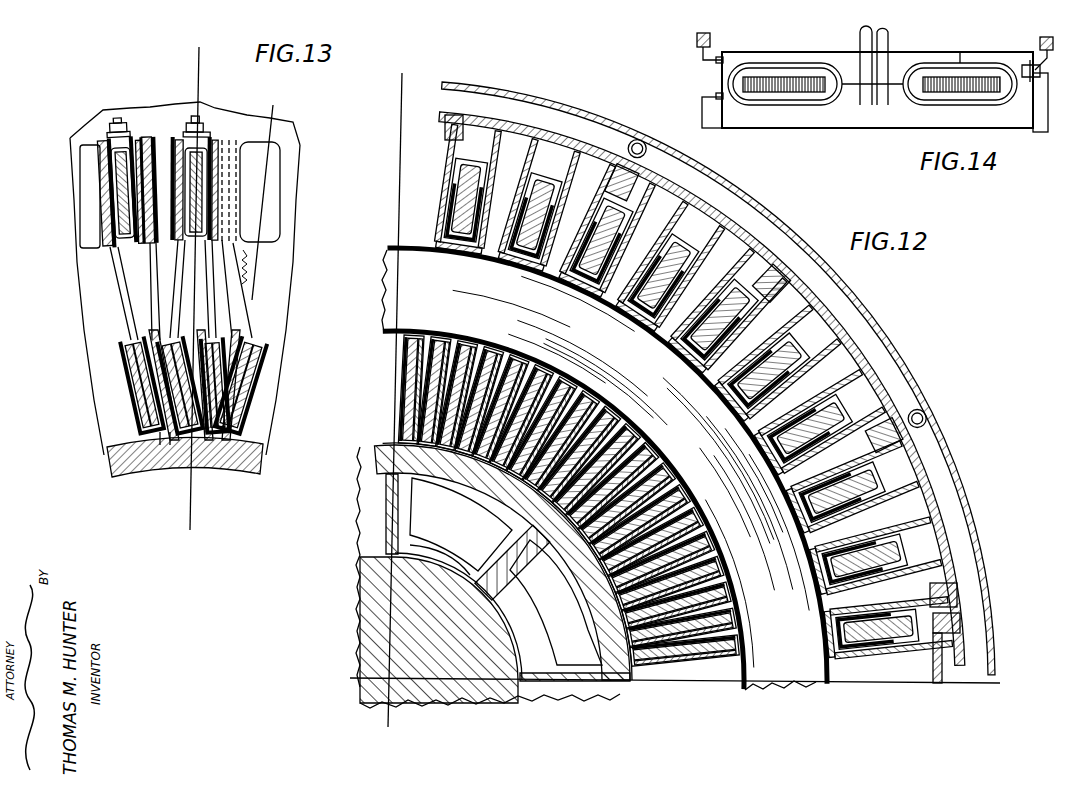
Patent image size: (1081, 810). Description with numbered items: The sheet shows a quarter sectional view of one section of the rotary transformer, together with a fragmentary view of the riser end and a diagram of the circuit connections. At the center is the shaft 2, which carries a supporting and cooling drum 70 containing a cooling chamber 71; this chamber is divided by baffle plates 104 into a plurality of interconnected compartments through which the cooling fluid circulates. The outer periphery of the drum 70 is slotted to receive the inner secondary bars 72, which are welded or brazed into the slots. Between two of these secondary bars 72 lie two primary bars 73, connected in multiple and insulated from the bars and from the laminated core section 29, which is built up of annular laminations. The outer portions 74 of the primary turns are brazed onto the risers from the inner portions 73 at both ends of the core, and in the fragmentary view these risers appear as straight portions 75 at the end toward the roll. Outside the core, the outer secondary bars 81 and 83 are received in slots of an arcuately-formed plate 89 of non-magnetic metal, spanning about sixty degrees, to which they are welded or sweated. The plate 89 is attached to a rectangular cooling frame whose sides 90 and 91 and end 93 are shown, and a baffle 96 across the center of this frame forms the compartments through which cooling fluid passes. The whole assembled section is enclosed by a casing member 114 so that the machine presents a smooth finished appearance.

In FIG. 12, the shaft 2 is at (446, 710).
In FIG. 12, the core section 29 is at (805, 695).
In FIG. 13, the supporting and cooling drum 70 is at (258, 470).
In FIG. 12, the supporting and cooling drum 70 is at (585, 585).
In FIG. 12, the cooling chamber 71 is at (576, 663).
In FIG. 13, the inner secondary bars 72 is at (258, 430).
In FIG. 12, the inner secondary bars 72 is at (516, 496).
In FIG. 12, the primary bars 73 is at (728, 568).
In FIG. 13, the outer portions of the primary turns 74 is at (125, 150).
In FIG. 12, the outer portions of the primary turns 74 is at (835, 376).
In FIG. 13, the straight primary riser portions 75 is at (132, 270).
In FIG. 12, the secondary bar 81 is at (917, 598).
In FIG. 12, the secondary bar 83 is at (900, 555).
In FIG. 12, the arcuately-formed plate 89 is at (927, 504).
In FIG. 12, the frame side 90 is at (952, 582).
In FIG. 12, the frame side 91 is at (836, 284).
In FIG. 13, the frame end 93 is at (170, 445).
In FIG. 12, the baffle 96 is at (896, 417).
In FIG. 12, the baffle plates 104 is at (518, 571).
In FIG. 12, the casing member 114 is at (960, 443).